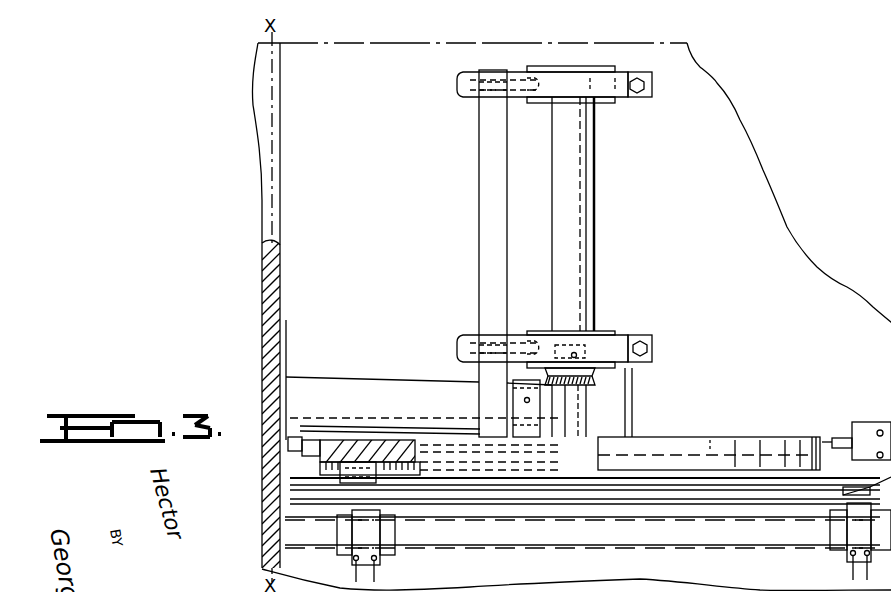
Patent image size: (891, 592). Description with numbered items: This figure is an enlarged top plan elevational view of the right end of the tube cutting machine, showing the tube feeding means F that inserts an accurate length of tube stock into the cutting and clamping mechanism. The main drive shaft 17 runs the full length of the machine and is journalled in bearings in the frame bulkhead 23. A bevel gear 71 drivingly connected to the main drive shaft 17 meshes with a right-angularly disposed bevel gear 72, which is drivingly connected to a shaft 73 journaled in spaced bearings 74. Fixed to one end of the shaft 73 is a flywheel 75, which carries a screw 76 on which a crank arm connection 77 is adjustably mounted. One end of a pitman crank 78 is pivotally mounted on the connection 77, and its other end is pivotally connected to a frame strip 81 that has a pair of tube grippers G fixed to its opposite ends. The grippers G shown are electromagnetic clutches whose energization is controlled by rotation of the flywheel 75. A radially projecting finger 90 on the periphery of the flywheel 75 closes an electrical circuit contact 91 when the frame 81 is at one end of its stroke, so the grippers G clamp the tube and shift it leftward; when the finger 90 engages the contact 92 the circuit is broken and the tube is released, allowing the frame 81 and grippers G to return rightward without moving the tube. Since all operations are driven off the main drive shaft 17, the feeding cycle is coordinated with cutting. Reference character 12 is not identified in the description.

The fluid cylinder 12 is at (858, 570).
The main drive shaft 17 is at (352, 376).
The frame bulkhead 23 is at (283, 262).
The bevel gear 71 is at (552, 408).
The bevel gear 72 is at (592, 385).
The shaft 73 is at (600, 427).
The spaced bearings 74 is at (612, 100).
The flywheel 75 is at (730, 442).
The screw 76 is at (412, 446).
The crank arm connection 77 is at (360, 427).
The pitman crank 78 is at (358, 490).
The frame strip 81 is at (707, 500).
The finger 90 is at (312, 444).
The electrical circuit contact 91 is at (846, 430).
The electrical circuit contact 92 is at (296, 438).
The tube feeding means F is at (690, 436).
The tube gripper G is at (395, 558).